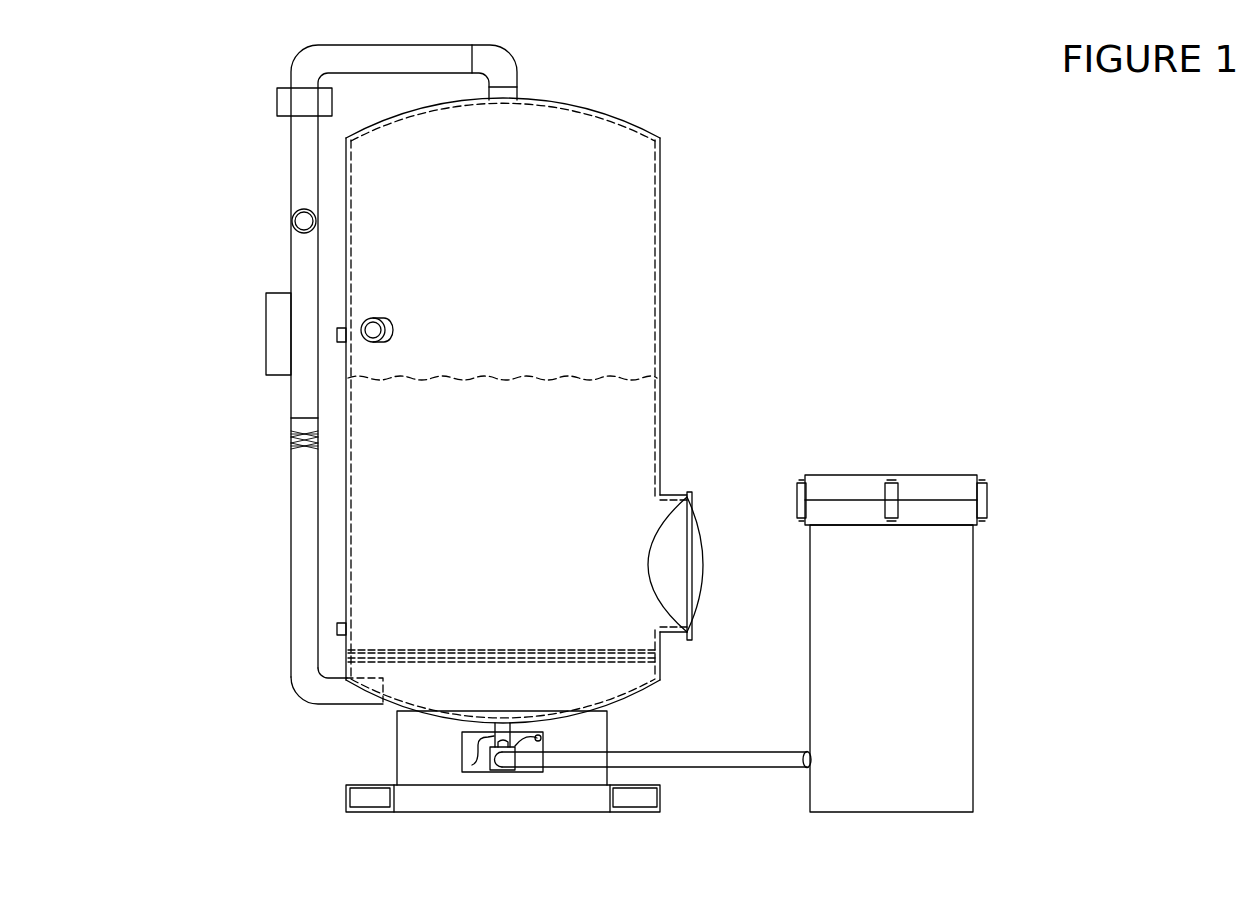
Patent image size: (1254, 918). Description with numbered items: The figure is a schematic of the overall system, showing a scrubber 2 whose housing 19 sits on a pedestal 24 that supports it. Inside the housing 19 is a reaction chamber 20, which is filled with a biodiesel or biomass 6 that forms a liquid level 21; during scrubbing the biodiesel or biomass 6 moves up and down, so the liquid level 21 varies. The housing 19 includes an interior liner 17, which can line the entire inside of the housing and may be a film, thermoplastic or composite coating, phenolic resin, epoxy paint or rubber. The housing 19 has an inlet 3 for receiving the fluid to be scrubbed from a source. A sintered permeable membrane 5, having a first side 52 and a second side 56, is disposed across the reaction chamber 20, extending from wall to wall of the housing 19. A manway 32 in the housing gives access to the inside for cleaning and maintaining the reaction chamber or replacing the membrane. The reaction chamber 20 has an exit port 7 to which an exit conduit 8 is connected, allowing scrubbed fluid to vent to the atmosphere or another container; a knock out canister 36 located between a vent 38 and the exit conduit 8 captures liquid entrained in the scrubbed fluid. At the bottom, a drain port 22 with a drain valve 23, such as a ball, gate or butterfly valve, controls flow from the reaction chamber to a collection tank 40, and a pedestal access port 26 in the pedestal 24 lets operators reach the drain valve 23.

The scrubber 2 is at (773, 85).
The inlet 3 is at (344, 693).
The sintered permeable membrane 5 is at (647, 655).
The biodiesel or biomass 6 is at (555, 445).
The exit port 7 is at (505, 93).
The exit conduit 8 is at (410, 57).
The interior liner 17 is at (620, 122).
The housing 19 is at (660, 288).
The reaction chamber 20 is at (590, 262).
The liquid level 21 is at (538, 373).
The drain port 22 is at (472, 765).
The drain valve 23 is at (495, 768).
The pedestal 24 is at (397, 747).
The pedestal access port 26 is at (512, 770).
The manway 32 is at (677, 530).
The knock out canister 36 is at (302, 100).
The vent 38 is at (275, 336).
The collection tank 40 is at (975, 672).
The first side 52 is at (507, 658).
The second side 56 is at (507, 655).